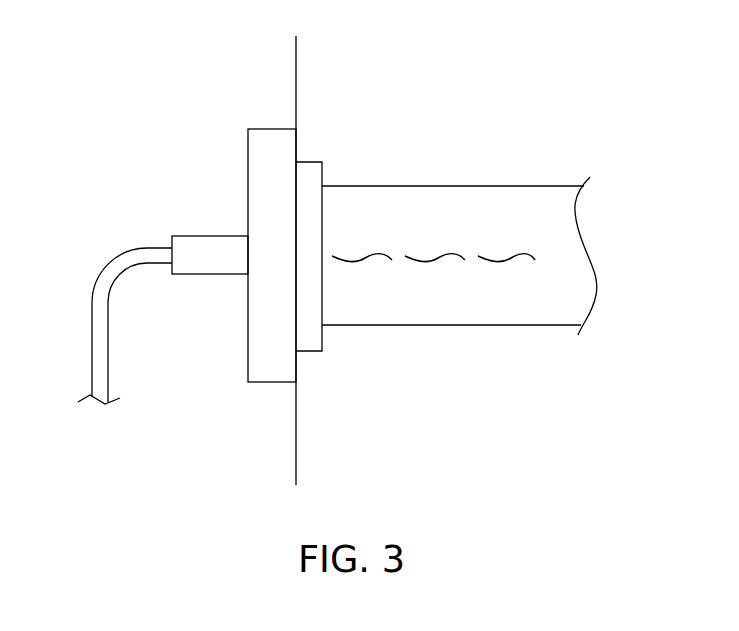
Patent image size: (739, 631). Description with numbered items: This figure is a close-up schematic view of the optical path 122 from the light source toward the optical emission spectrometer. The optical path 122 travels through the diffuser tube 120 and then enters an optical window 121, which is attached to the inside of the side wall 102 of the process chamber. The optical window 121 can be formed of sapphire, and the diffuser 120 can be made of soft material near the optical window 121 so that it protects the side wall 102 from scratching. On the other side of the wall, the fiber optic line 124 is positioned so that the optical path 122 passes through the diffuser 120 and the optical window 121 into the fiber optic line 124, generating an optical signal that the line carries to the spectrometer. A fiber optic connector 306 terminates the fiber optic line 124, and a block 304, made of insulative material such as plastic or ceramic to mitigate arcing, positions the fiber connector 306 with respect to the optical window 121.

The side wall 102 is at (297, 70).
The block 304 is at (263, 128).
The optical window 121 is at (310, 160).
The diffuser tube 120 is at (478, 325).
The optical path 122 is at (535, 260).
The fiber optic connector 306 is at (202, 236).
The fiber optic line 124 is at (110, 347).